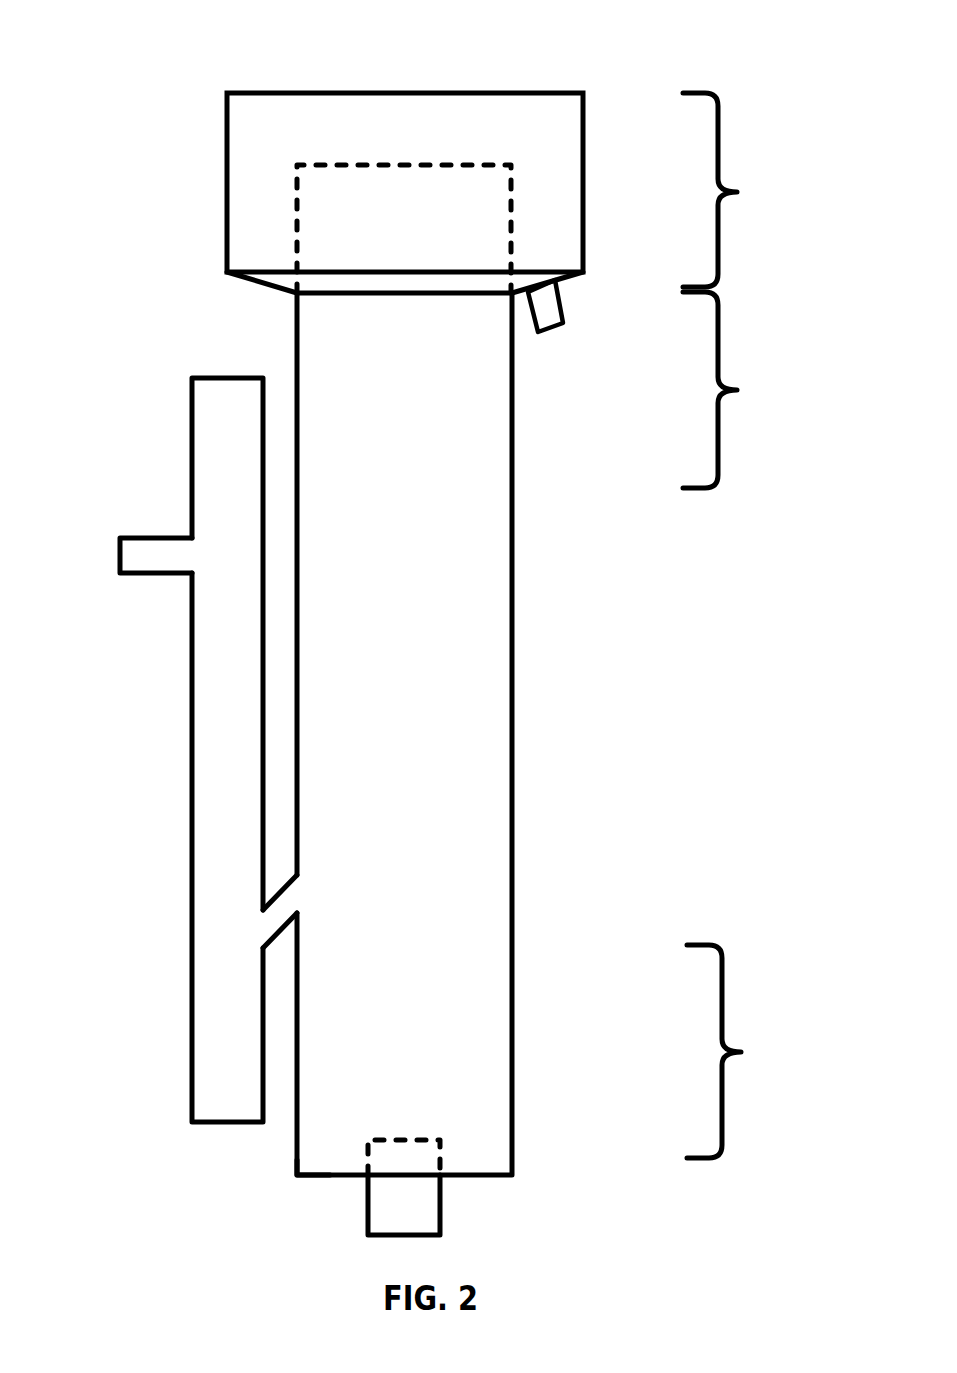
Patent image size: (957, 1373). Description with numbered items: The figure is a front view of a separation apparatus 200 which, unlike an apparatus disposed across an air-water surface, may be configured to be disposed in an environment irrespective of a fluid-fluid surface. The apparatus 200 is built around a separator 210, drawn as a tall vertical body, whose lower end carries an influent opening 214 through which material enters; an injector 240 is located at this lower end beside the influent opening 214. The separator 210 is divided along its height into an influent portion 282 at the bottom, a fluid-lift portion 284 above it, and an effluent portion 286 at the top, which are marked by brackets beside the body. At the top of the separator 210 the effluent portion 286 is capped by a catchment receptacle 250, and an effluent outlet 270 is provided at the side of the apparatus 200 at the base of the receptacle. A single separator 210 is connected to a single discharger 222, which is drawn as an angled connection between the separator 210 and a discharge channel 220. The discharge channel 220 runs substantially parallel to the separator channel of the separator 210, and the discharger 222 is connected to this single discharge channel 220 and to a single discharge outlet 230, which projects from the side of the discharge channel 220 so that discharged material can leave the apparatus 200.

The apparatus 200 is at (157, 70).
The separator 210 is at (473, 732).
The influent opening 214 is at (327, 1182).
The discharge channel 220 is at (228, 447).
The discharger 222 is at (280, 908).
The discharge outlet 230 is at (140, 550).
The injector 240 is at (420, 1193).
The catchment receptacle 250 is at (247, 197).
The effluent outlet 270 is at (545, 302).
The influent portion 282 is at (741, 1051).
The fluid-lift portion 284 is at (735, 390).
The effluent portion 286 is at (735, 190).